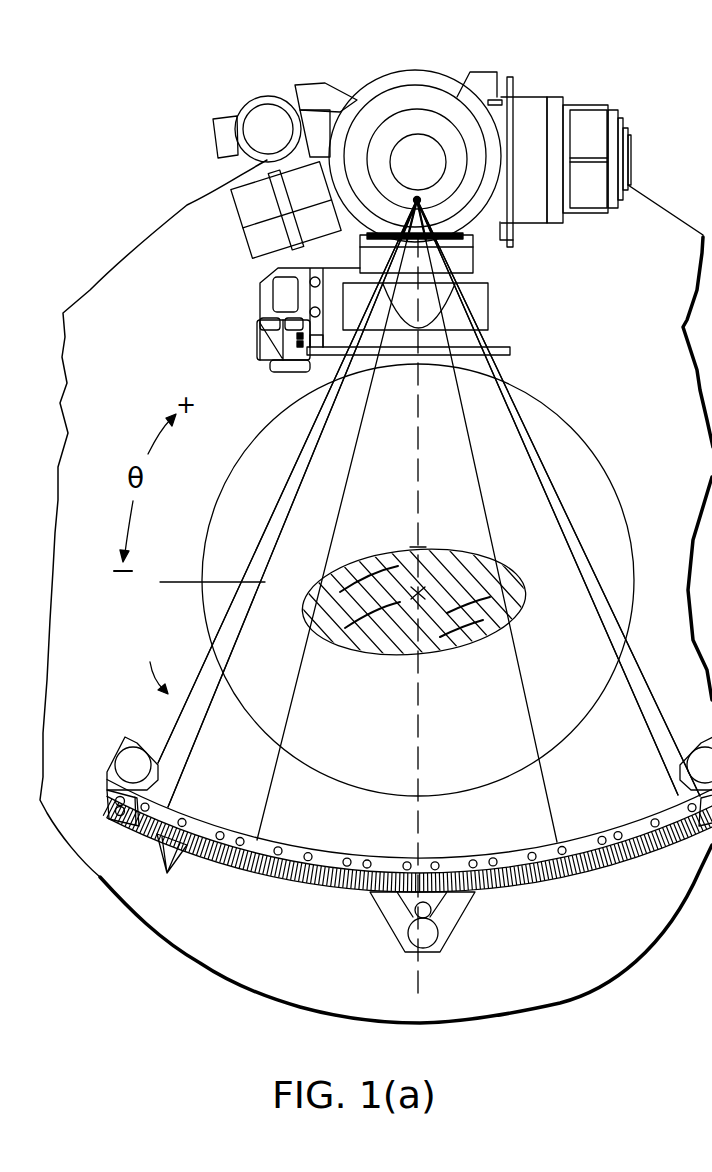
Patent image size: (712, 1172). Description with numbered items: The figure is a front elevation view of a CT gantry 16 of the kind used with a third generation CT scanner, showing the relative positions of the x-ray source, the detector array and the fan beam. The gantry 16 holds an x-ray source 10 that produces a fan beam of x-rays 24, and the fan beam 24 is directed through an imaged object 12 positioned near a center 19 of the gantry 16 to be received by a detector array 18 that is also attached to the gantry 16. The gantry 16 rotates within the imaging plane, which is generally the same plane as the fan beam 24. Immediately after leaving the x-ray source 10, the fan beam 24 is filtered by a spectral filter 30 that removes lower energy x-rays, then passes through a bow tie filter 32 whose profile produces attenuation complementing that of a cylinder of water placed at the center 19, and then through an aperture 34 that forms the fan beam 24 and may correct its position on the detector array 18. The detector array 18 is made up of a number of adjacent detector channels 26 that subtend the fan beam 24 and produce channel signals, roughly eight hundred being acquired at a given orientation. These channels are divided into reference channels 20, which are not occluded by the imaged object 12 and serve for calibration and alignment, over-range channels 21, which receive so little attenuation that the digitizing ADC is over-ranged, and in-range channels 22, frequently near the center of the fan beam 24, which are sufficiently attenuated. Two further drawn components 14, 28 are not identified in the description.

The x-ray source 10 is at (430, 72).
The imaged object 12 is at (527, 618).
The focal point of source 14 is at (420, 197).
The CT gantry 16 is at (638, 401).
The detector array 18 is at (662, 852).
The center 19 is at (430, 585).
The reference channels 20 is at (170, 742).
The over-range channels 21 is at (228, 713).
The in-range channels 22 is at (445, 415).
The fan beam 24 is at (148, 662).
The detector channels 26 is at (169, 870).
The pivot support 28 is at (421, 1003).
The spectral filter 30 is at (473, 268).
The bow tie filter 32 is at (487, 308).
The aperture 34 is at (507, 348).